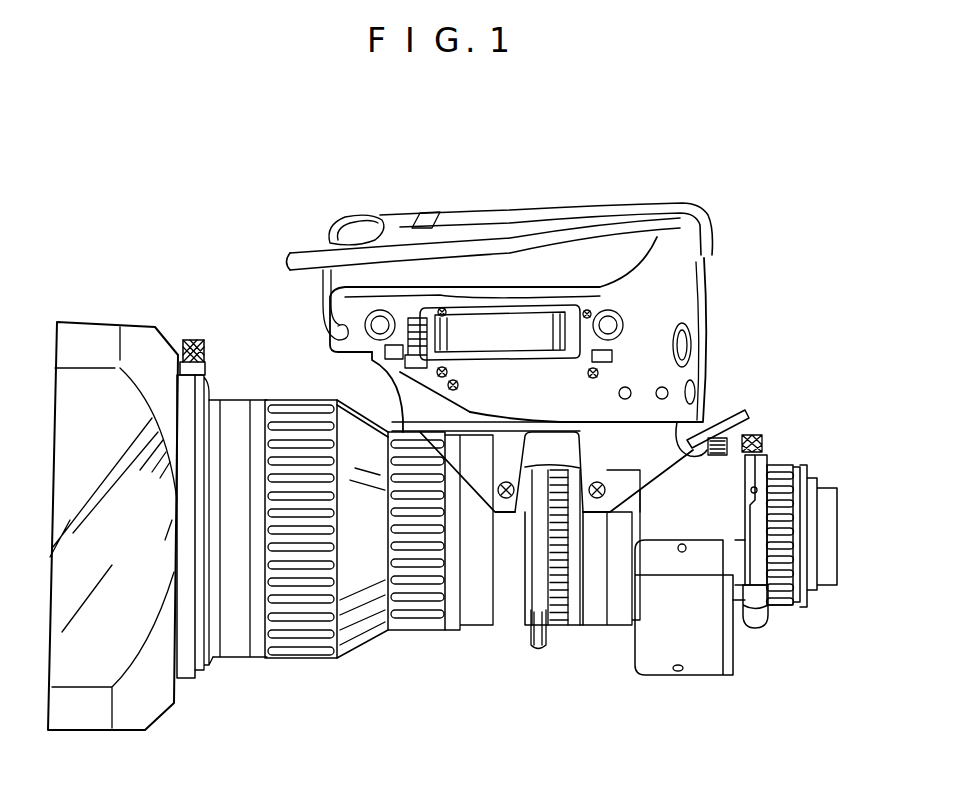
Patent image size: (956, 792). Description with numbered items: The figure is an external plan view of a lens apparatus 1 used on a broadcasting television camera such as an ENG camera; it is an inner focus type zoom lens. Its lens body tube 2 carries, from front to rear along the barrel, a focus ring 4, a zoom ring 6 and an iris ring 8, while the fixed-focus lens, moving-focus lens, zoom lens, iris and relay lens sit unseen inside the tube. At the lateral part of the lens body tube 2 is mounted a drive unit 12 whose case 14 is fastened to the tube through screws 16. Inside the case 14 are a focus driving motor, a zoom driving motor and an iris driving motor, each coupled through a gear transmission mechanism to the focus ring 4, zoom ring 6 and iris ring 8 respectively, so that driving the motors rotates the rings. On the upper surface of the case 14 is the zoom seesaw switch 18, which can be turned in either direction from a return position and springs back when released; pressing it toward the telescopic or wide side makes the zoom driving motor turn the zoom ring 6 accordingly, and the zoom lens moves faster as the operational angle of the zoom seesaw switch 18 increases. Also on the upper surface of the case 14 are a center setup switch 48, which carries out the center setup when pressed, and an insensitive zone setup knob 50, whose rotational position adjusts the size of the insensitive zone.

The lens apparatus 1 is at (230, 325).
The lens body tube 2 is at (382, 655).
The focus ring 4 is at (451, 634).
The zoom ring 6 is at (520, 630).
The iris ring 8 is at (609, 630).
The drive unit 12 is at (453, 272).
The case 14 is at (388, 390).
The screws 16 is at (506, 480).
The zoom seesaw switch 18 is at (512, 328).
The center setup switch 48 is at (631, 392).
The insensitive zone setup knob 50 is at (668, 393).